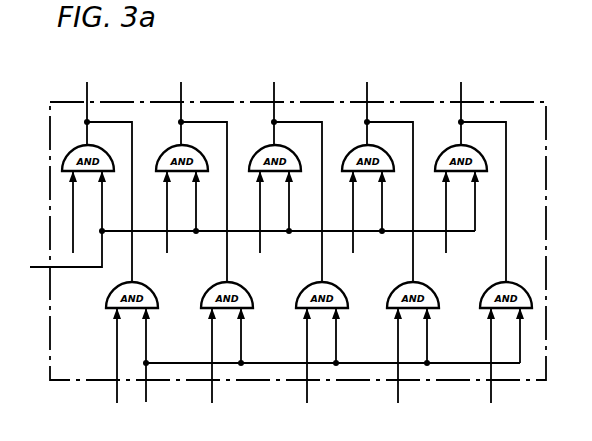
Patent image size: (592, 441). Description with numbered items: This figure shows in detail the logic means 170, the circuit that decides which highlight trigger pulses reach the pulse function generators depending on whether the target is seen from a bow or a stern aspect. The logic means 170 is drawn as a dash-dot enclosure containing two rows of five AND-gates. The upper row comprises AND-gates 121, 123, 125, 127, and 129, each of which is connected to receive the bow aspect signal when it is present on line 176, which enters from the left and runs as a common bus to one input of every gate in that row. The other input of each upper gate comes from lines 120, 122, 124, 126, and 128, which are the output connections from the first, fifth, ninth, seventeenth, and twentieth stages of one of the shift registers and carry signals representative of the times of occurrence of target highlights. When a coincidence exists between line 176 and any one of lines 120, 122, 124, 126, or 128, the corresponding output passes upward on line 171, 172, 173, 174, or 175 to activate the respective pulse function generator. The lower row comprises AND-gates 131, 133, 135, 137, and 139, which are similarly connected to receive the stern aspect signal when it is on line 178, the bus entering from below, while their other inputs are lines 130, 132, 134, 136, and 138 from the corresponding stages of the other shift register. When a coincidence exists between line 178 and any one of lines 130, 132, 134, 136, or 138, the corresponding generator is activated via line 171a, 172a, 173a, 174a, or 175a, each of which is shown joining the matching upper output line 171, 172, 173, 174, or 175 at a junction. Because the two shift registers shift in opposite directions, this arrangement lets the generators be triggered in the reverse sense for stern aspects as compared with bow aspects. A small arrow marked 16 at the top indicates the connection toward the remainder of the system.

The connection to circuit of other figure 16 is at (444, 5).
The logic means 170 is at (45, 110).
The line 171 is at (87, 92).
The line 172 is at (181, 92).
The line 173 is at (274, 92).
The line 174 is at (367, 92).
The line 175 is at (462, 92).
The line 171a is at (133, 270).
The line 172a is at (228, 270).
The line 173a is at (323, 270).
The line 174a is at (414, 272).
The line 175a is at (504, 272).
The AND-gate 121 is at (108, 157).
The AND-gate 123 is at (212, 147).
The AND-gate 125 is at (305, 147).
The AND-gate 127 is at (398, 147).
The AND-gate 129 is at (491, 148).
The line 120 is at (72, 221).
The line 122 is at (152, 212).
The line 124 is at (248, 212).
The line 126 is at (343, 212).
The line 128 is at (435, 212).
The line 176 is at (252, 233).
The AND-gate 131 is at (157, 297).
The AND-gate 133 is at (252, 297).
The AND-gate 135 is at (354, 290).
The AND-gate 137 is at (438, 302).
The AND-gate 139 is at (532, 294).
The line 130 is at (96, 355).
The line 132 is at (212, 338).
The line 134 is at (287, 355).
The line 136 is at (380, 355).
The line 138 is at (471, 355).
The line 178 is at (143, 398).